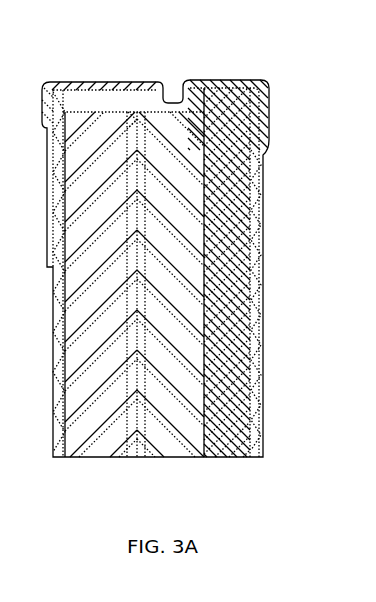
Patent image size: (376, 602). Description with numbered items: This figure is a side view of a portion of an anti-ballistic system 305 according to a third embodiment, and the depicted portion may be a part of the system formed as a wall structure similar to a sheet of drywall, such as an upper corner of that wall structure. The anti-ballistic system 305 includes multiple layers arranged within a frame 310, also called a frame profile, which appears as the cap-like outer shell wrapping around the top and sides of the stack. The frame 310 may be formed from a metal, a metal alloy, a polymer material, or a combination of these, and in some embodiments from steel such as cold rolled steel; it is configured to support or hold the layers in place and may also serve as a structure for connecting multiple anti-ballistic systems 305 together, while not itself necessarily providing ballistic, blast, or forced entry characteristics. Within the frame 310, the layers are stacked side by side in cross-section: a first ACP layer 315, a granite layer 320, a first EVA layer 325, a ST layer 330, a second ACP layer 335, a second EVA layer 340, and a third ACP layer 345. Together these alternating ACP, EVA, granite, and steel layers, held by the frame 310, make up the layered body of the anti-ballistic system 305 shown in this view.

The anti-ballistic system 305 is at (246, 60).
The frame 310 is at (274, 100).
The first ACP layer 315 is at (266, 295).
The granite layer 320 is at (233, 462).
The first EVA layer 325 is at (176, 462).
The ST layer 330 is at (143, 462).
The second ACP layer 335 is at (127, 462).
The second EVA layer 340 is at (94, 462).
The third ACP layer 345 is at (57, 462).